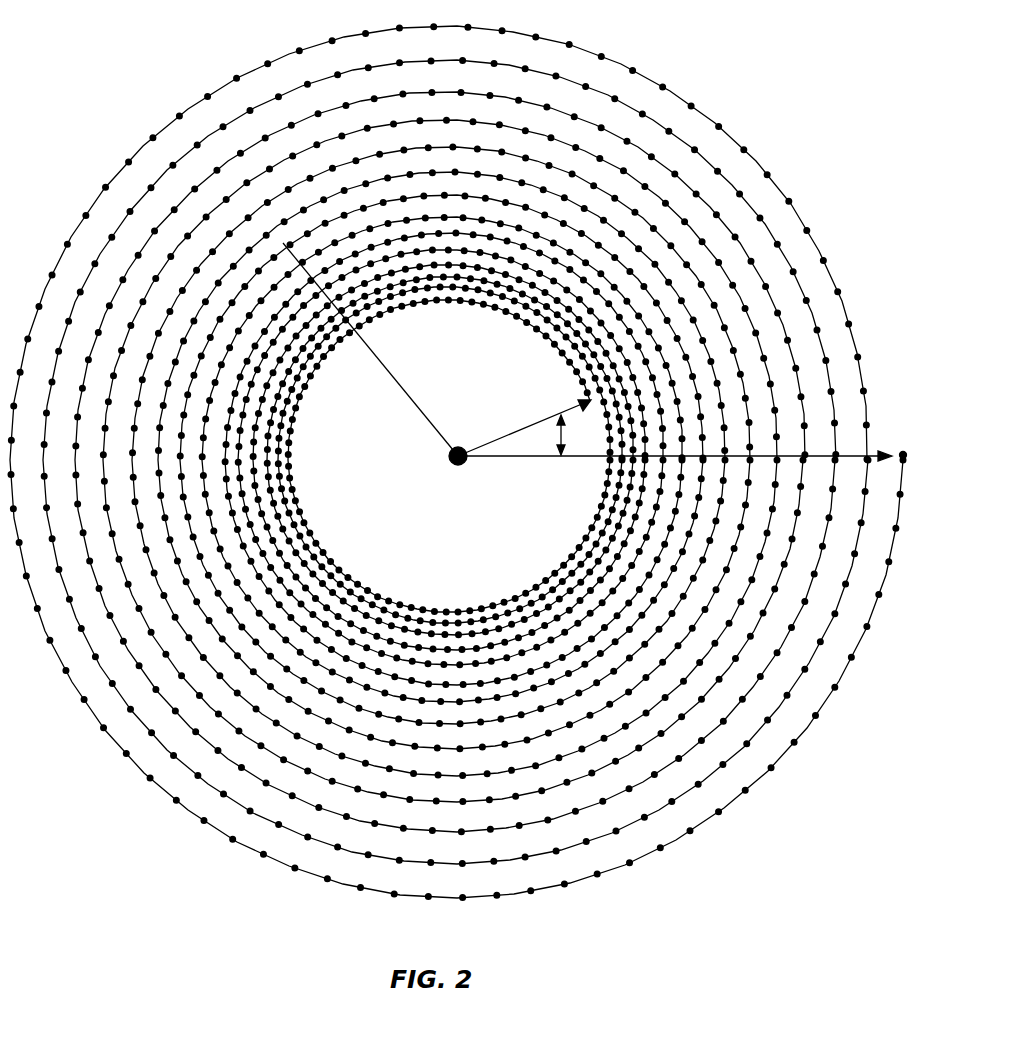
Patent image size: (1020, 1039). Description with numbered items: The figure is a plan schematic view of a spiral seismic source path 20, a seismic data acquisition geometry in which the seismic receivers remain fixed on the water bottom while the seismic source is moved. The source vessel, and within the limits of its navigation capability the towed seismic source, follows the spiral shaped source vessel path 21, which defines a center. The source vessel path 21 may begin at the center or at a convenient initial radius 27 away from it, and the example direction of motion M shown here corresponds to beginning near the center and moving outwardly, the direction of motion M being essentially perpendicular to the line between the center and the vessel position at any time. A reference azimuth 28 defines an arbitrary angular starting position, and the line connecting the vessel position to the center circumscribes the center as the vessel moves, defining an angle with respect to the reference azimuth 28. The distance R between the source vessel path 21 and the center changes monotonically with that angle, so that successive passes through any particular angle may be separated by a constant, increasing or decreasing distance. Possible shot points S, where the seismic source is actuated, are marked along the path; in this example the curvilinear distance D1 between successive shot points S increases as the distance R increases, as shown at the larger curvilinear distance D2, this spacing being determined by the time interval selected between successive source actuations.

The spiral seismic source path 20 is at (466, 457).
The source vessel path 21 is at (247, 77).
The initial radius 27 is at (523, 426).
The reference azimuth 28 is at (528, 465).
The distance R is at (404, 380).
The shot points S is at (72, 240).
The curvilinear distance D1 is at (298, 502).
The curvilinear distance D2 is at (725, 134).
The direction of motion M is at (906, 436).